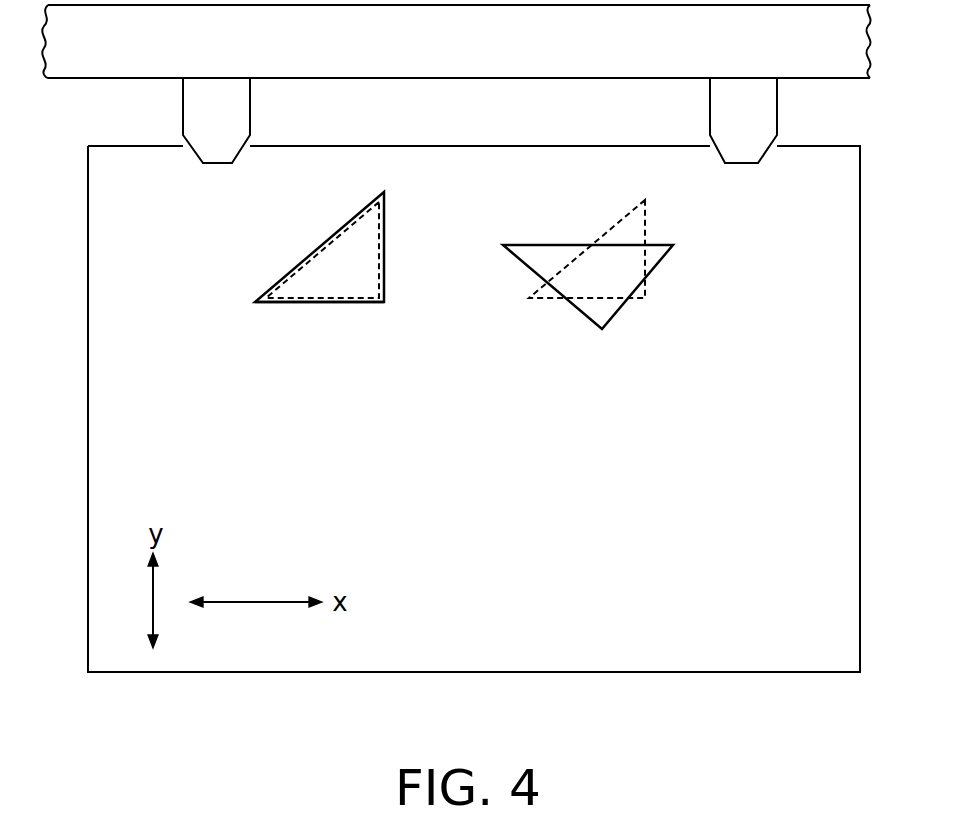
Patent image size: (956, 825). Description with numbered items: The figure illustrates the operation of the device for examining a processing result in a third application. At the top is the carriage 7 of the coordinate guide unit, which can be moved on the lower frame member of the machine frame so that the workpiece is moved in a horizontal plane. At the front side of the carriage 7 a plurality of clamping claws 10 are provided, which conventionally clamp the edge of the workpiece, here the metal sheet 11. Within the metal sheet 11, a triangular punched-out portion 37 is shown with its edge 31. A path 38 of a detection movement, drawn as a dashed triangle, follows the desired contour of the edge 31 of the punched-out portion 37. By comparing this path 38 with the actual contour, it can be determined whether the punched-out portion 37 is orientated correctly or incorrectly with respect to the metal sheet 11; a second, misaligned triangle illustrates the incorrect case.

The carriage 7 is at (463, 56).
The clamping claws 10 is at (200, 128).
The metal sheet 11 is at (790, 626).
The edge 31 is at (287, 275).
The punched-out portion 37 is at (322, 308).
The path of a detection movement 38 is at (386, 282).